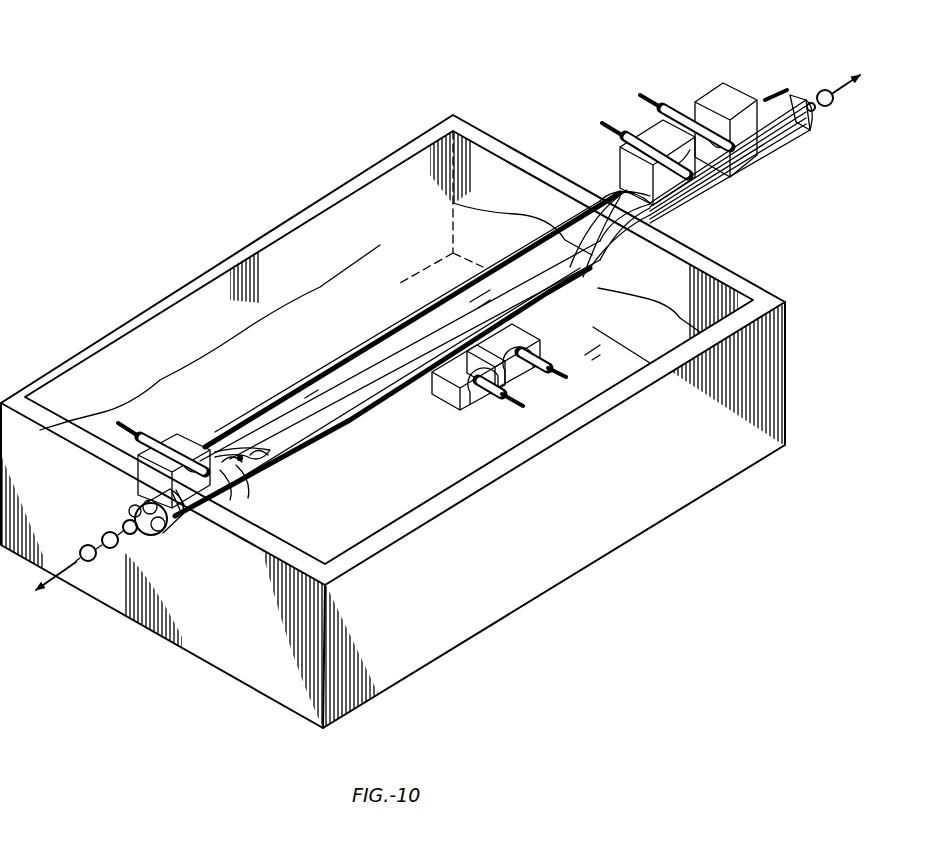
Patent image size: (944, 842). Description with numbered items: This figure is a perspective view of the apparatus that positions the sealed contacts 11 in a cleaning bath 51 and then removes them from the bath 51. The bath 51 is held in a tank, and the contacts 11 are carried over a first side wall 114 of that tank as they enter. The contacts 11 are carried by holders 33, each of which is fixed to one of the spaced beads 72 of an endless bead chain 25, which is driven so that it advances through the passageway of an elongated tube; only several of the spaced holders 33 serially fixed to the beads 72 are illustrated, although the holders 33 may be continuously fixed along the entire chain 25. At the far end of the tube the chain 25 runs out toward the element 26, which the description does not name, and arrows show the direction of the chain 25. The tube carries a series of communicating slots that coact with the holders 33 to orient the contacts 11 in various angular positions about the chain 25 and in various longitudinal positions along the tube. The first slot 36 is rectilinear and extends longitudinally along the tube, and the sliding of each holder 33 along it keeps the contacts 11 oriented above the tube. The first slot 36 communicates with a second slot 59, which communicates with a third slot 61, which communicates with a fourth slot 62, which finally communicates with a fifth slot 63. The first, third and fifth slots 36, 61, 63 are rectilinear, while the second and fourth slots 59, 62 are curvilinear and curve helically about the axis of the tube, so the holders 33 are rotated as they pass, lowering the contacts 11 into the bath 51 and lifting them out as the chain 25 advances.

The first side wall 114 is at (507, 150).
The bath 51 is at (320, 280).
The second slot 59 is at (567, 262).
The third slot 61 is at (405, 388).
The fourth slot 62 is at (270, 447).
The first slot 36 is at (663, 203).
The belt end 26 is at (795, 92).
The holder 33 is at (195, 425).
The contact 11 is at (148, 423).
The fifth slot 63 is at (179, 526).
The bead 72 is at (108, 533).
The endless bead chain 25 is at (107, 560).